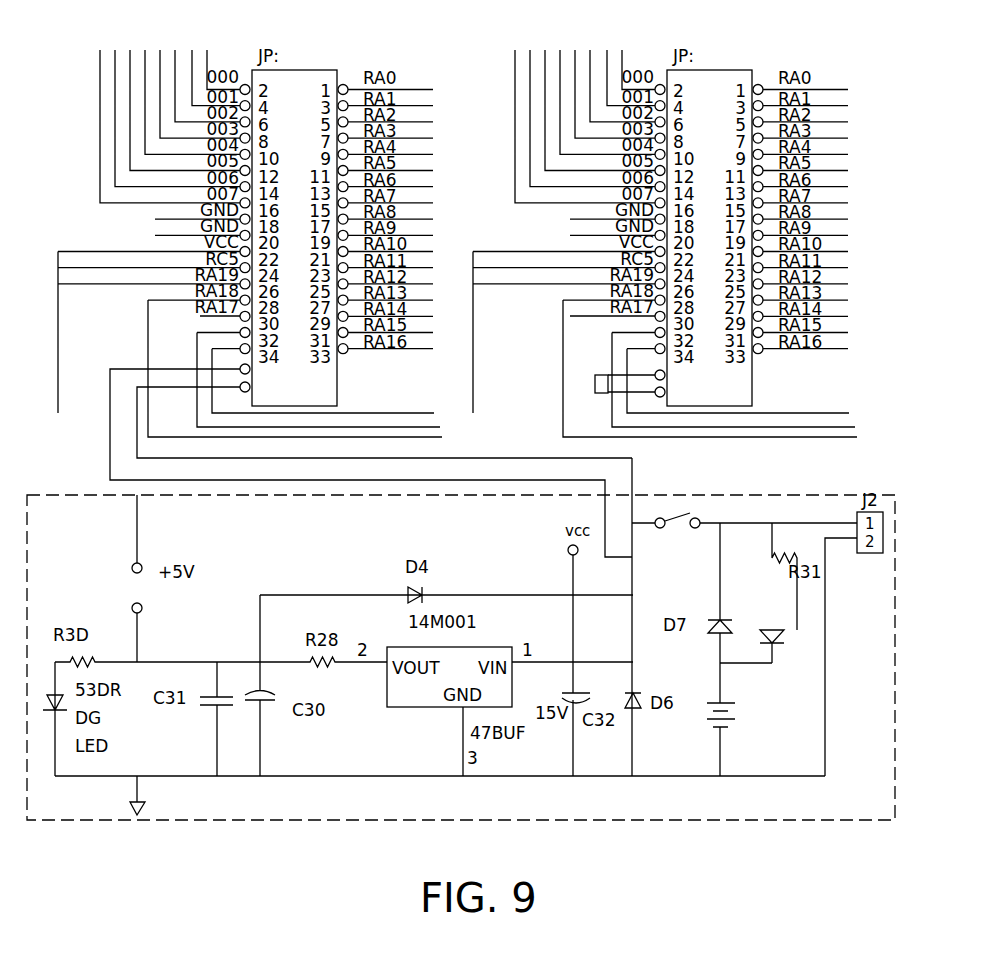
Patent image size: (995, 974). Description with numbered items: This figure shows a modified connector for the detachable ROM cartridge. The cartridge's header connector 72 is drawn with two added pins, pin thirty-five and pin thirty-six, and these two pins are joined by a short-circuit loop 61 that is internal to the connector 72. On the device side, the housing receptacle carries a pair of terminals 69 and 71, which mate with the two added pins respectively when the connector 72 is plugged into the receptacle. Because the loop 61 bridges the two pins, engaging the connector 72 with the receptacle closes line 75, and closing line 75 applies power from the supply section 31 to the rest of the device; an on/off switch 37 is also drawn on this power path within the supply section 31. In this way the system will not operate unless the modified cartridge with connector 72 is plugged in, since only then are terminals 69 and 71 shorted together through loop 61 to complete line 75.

The connector 72 is at (277, 78).
The terminal 69 is at (207, 369).
The terminal 71 is at (207, 389).
The loop 61 is at (595, 383).
The supply section 31 is at (253, 570).
The mover on/off switch 37 is at (744, 523).
The line 75 is at (633, 595).